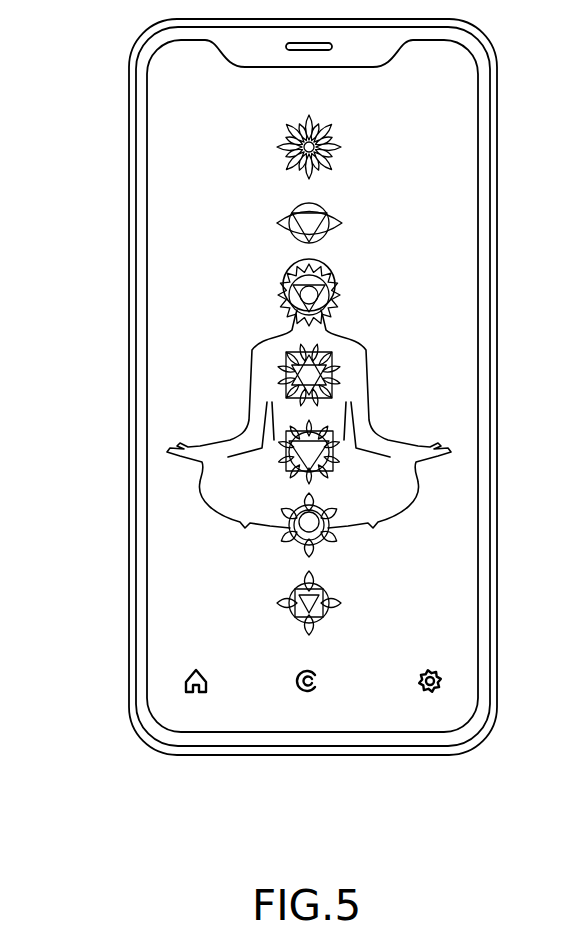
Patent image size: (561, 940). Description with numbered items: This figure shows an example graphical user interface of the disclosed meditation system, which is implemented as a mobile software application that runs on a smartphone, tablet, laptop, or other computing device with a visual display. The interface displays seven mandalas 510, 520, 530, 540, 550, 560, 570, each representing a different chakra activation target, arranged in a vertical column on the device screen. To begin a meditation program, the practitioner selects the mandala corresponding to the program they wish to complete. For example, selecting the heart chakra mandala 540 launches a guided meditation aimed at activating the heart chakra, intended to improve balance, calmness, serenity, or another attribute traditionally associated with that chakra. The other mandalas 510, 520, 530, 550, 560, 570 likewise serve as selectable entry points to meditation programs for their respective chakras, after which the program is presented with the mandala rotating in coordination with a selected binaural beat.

The mandala 510 is at (293, 128).
The mandala 520 is at (300, 212).
The mandala 530 is at (297, 307).
The heart chakra mandala 540 is at (293, 373).
The mandala 550 is at (298, 462).
The mandala 560 is at (287, 527).
The mandala 570 is at (287, 604).